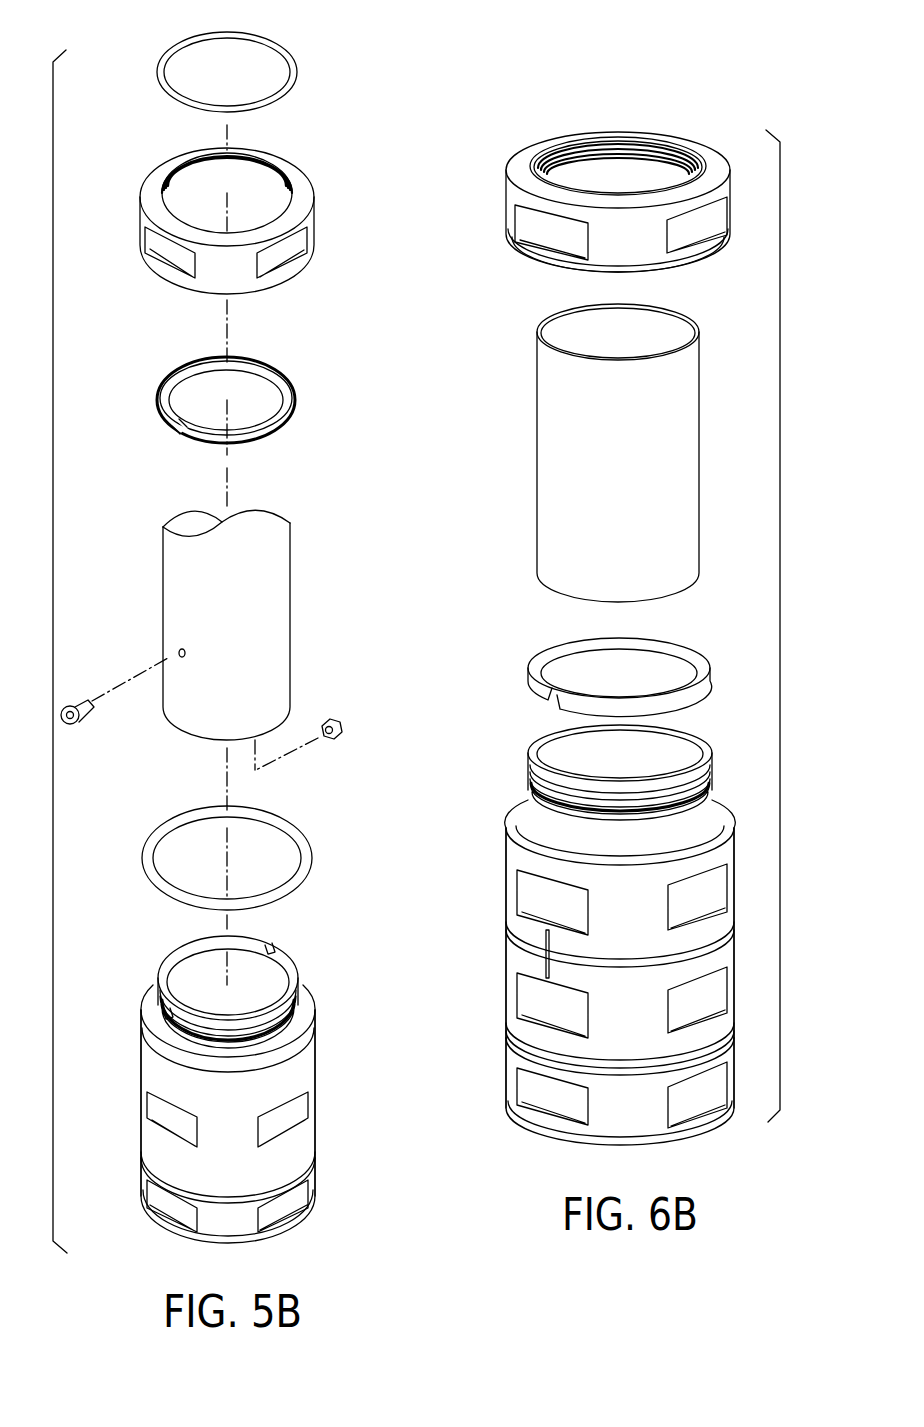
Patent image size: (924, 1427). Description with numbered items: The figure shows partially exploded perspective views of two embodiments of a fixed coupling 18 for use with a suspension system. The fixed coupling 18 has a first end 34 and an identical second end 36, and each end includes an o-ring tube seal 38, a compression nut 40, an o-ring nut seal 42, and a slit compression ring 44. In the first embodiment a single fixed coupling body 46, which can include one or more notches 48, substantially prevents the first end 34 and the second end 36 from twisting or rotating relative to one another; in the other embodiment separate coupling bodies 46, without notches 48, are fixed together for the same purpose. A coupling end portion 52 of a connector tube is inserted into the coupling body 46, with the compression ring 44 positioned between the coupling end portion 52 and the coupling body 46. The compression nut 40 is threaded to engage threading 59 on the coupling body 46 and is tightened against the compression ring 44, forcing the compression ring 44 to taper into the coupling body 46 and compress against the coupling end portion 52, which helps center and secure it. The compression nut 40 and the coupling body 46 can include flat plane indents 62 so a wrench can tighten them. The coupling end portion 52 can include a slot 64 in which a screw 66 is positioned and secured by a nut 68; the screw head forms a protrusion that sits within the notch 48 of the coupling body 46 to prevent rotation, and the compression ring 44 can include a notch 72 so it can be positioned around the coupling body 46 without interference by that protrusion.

In FIG. 5B, the fixed coupling 18 is at (154, 48).
In FIG. 6B, the fixed coupling 18 is at (526, 107).
In FIG. 5B, the first end 34 is at (290, 131).
In FIG. 6B, the first end 34 is at (684, 110).
In FIG. 5B, the second end 36 is at (270, 1240).
In FIG. 6B, the second end 36 is at (698, 1135).
In FIG. 5B, the o-ring tube seal 38 is at (272, 45).
In FIG. 6B, the o-ring tube seal 38 is at (577, 137).
In FIG. 5B, the compression nut 40 is at (150, 198).
In FIG. 6B, the compression nut 40 is at (520, 168).
In FIG. 5B, the o-ring nut seal 42 is at (290, 825).
In FIG. 6B, the o-ring nut seal 42 is at (688, 265).
In FIG. 5B, the slit compression ring 44 is at (290, 410).
In FIG. 6B, the slit compression ring 44 is at (630, 156).
In FIG. 5B, the fixed coupling body 46 is at (163, 1158).
In FIG. 6B, the fixed coupling body 46 is at (520, 858).
In FIG. 5B, the notch 48 is at (270, 948).
In FIG. 5B, the coupling end portion 52 is at (177, 564).
In FIG. 6B, the coupling end portion 52 is at (567, 446).
In FIG. 5B, the threading 59 is at (275, 1030).
In FIG. 6B, the threading 59 is at (710, 790).
In FIG. 5B, the flat plane indents 62 is at (170, 252).
In FIG. 6B, the flat plane indents 62 is at (555, 232).
In FIG. 5B, the slot 64 is at (180, 650).
In FIG. 5B, the screw 66 is at (80, 705).
In FIG. 5B, the nut 68 is at (336, 722).
In FIG. 5B, the notch 72 is at (180, 432).